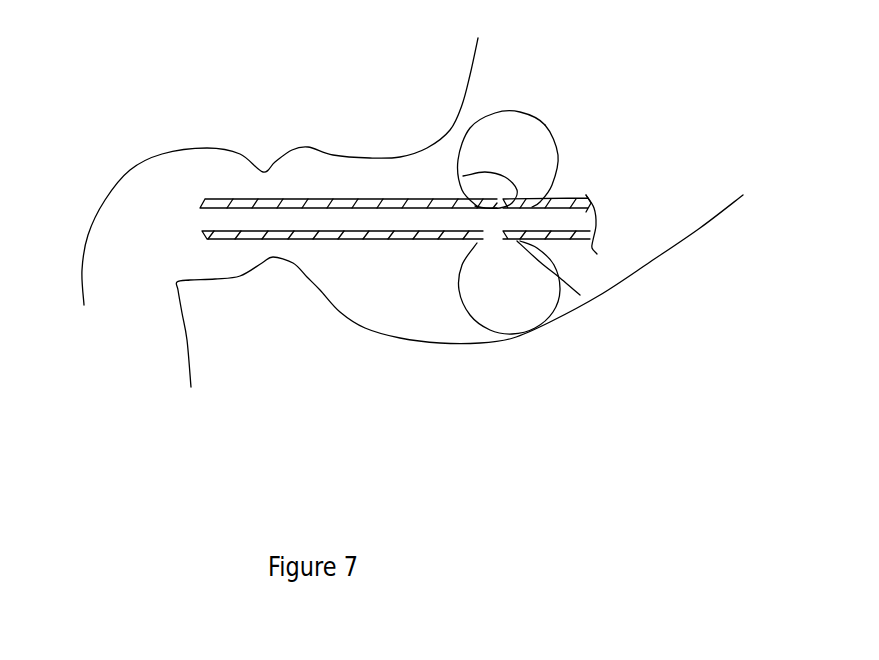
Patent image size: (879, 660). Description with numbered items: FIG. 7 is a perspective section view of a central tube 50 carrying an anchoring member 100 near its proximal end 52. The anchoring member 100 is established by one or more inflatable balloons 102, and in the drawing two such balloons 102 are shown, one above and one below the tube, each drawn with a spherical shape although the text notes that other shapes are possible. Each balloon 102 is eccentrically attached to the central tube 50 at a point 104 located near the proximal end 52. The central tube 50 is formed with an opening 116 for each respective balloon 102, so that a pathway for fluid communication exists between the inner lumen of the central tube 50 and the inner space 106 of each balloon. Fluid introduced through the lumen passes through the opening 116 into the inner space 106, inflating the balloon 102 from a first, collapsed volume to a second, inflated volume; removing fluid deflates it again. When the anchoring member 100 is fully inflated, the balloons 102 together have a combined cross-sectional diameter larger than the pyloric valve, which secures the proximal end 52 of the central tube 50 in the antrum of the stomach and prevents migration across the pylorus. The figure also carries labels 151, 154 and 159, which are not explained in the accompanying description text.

The central tube 50 is at (303, 245).
The proximal end 52 is at (573, 170).
The anchoring member 100 is at (655, 82).
The inflatable balloon 102 is at (517, 110).
The attachment point 104 is at (477, 243).
The inner space of balloon 106 is at (513, 312).
The opening 116 is at (580, 295).
The inner loop 151 is at (463, 176).
The first tissue layer 154 is at (275, 198).
The tube distal tip 159 is at (578, 222).